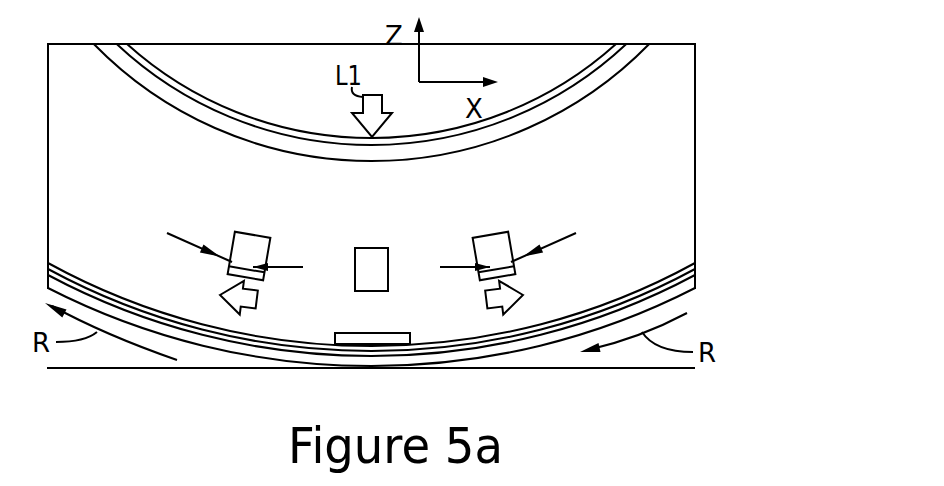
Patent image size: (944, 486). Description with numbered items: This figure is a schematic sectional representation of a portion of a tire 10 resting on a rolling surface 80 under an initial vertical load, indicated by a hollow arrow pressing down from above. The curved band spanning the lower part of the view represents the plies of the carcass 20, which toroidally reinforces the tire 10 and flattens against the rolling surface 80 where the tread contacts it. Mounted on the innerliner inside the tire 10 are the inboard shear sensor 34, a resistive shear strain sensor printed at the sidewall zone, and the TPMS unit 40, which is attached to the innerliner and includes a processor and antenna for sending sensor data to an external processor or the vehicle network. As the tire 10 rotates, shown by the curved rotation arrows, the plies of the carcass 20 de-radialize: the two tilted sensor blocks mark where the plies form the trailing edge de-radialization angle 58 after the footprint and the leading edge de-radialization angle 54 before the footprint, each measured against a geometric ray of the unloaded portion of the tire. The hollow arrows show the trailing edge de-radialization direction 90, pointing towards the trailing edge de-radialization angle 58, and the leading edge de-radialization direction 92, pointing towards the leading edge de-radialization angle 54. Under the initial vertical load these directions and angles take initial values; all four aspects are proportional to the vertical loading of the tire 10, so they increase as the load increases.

The tire 10 is at (745, 110).
The carcass 20 is at (640, 281).
The inboard shear sensor 34 is at (392, 268).
The TPMS unit 40 is at (365, 333).
The leading edge de-radialization angle 54 is at (554, 243).
The trailing edge de-radialization angle 58 is at (189, 243).
The rolling surface 80 is at (673, 369).
The trailing edge de-radialization direction 90 is at (218, 295).
The leading edge de-radialization direction 92 is at (525, 294).